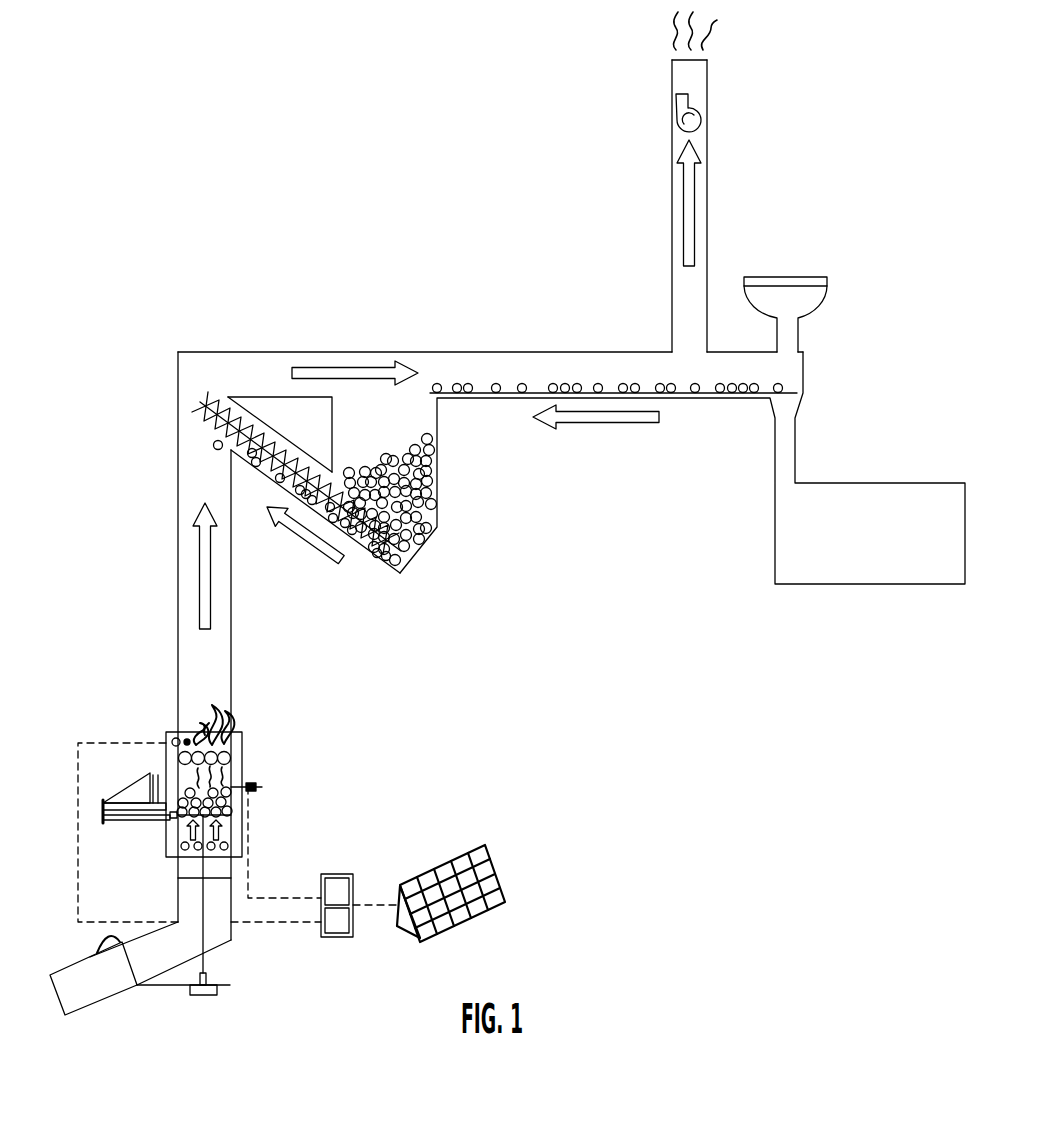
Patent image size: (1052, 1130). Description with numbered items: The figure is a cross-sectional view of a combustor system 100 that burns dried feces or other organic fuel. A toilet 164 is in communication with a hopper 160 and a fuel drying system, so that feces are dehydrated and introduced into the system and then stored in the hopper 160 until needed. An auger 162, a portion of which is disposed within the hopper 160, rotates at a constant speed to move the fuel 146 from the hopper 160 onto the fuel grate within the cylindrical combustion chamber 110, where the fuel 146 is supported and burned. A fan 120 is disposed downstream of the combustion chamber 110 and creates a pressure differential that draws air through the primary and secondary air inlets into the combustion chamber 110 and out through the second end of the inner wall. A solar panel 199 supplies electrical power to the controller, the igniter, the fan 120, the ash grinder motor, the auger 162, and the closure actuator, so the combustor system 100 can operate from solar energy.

The combustor system 100 is at (305, 79).
The combustion chamber 110 is at (175, 727).
The fan 120 is at (697, 117).
The fuel 146 is at (755, 393).
The hopper 160 is at (427, 535).
The auger 162 is at (362, 545).
The toilet 164 is at (803, 300).
The solar panel 199 is at (495, 862).